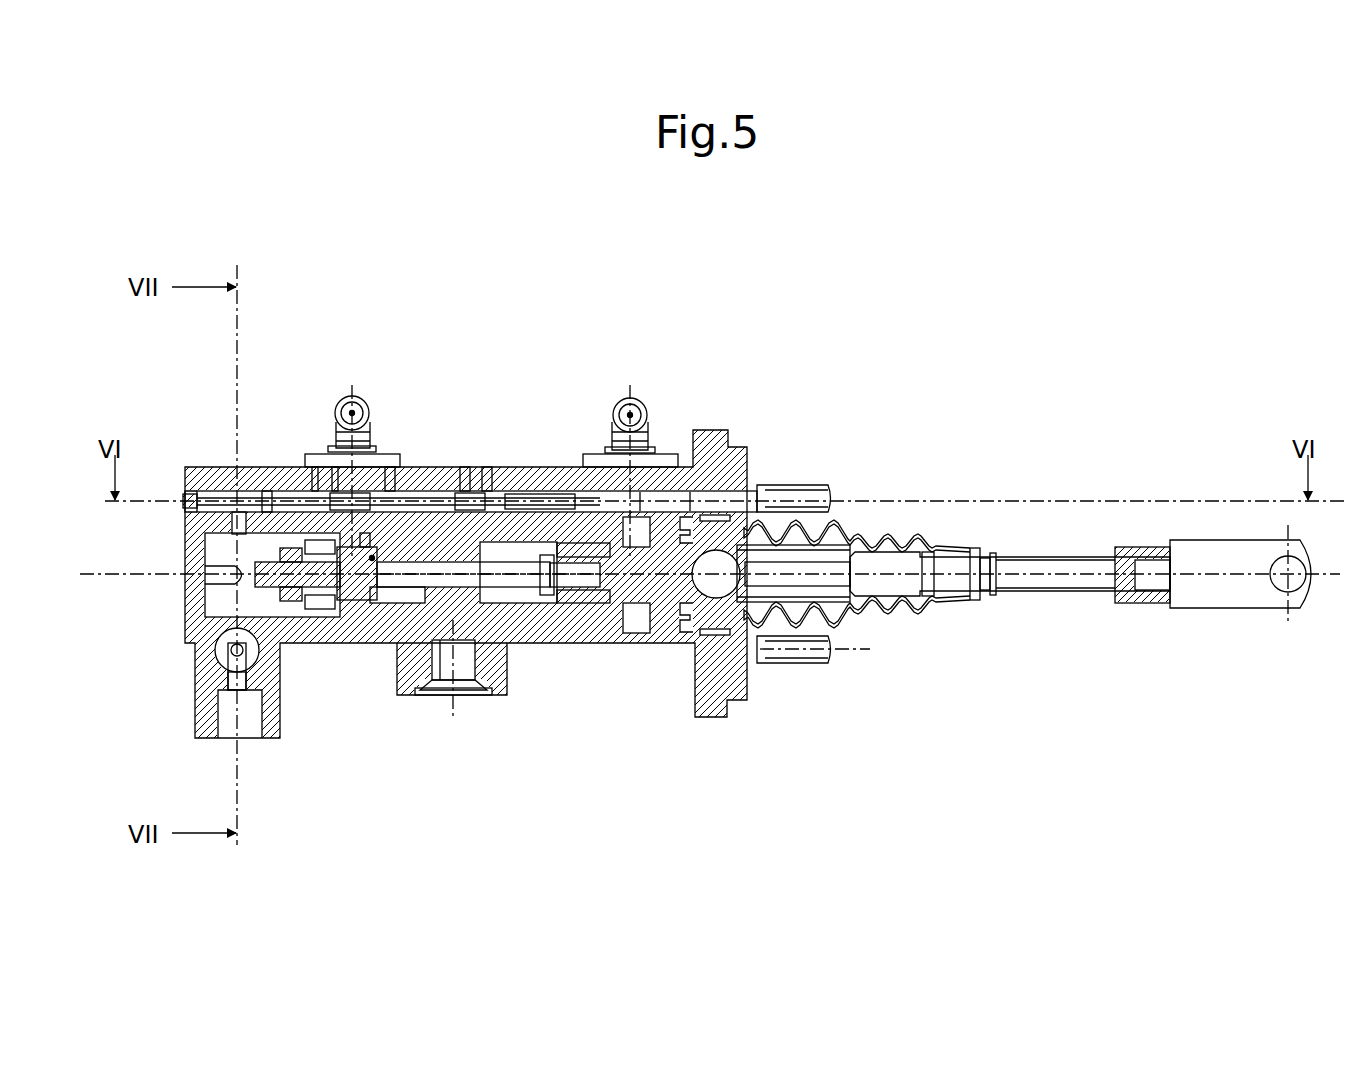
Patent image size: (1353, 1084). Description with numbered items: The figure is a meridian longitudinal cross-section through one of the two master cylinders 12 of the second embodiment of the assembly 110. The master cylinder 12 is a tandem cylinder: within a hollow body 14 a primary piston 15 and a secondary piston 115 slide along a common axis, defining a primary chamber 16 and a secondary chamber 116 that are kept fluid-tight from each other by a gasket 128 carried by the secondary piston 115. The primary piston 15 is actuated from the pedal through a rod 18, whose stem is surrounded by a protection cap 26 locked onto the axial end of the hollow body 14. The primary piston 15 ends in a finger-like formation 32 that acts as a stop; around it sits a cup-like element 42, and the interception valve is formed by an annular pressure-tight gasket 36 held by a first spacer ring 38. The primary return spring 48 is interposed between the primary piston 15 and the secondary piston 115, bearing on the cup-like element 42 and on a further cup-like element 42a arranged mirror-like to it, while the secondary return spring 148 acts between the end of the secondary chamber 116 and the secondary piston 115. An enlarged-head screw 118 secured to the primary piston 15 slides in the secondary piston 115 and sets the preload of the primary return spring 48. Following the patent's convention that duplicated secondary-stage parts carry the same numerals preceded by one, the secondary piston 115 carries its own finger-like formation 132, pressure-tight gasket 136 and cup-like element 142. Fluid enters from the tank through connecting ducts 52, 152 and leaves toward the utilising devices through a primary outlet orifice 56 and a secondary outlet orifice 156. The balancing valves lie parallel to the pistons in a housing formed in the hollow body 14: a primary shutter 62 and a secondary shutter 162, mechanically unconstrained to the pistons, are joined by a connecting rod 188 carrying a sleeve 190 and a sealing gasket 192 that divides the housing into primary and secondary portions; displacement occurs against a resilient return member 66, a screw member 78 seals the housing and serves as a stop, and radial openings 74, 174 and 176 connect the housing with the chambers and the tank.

The master cylinder 12 is at (722, 428).
The hollow body 14 is at (740, 677).
The primary piston 15 is at (762, 493).
The primary chamber 16 is at (487, 612).
The rod 18 is at (1068, 566).
The protection cap 26 is at (878, 535).
The finger-like formation 32 is at (588, 610).
The annular pressure-tight gasket 36 is at (613, 620).
The first spacer ring 38 is at (648, 480).
The cup-like element 42 is at (578, 585).
The further cup-like element 42a is at (485, 490).
The primary return spring 48 is at (535, 580).
The connecting duct 52 is at (632, 500).
The primary outlet orifice 56 is at (458, 663).
The shutter 62 is at (515, 485).
The resilient return member 66 is at (530, 495).
The first radial opening 74 is at (462, 490).
The screw member 78 is at (188, 490).
The assembly 110 is at (888, 268).
The secondary piston 115 is at (368, 545).
The secondary chamber 116 is at (185, 594).
The enlarged-head screw 118 is at (525, 588).
The gasket 128 is at (447, 642).
The piston 132 is at (322, 603).
The seal 136 is at (313, 603).
The rod 142 is at (285, 600).
The secondary return spring 148 is at (272, 740).
The connection fitting 152 is at (351, 396).
The secondary outlet orifice 156 is at (262, 682).
The secondary shutter 162 is at (270, 497).
The passage 174 is at (232, 520).
The passage 176 is at (338, 500).
The connecting rod 188 is at (322, 490).
The sleeve 190 is at (372, 556).
The sealing gasket 192 is at (390, 495).